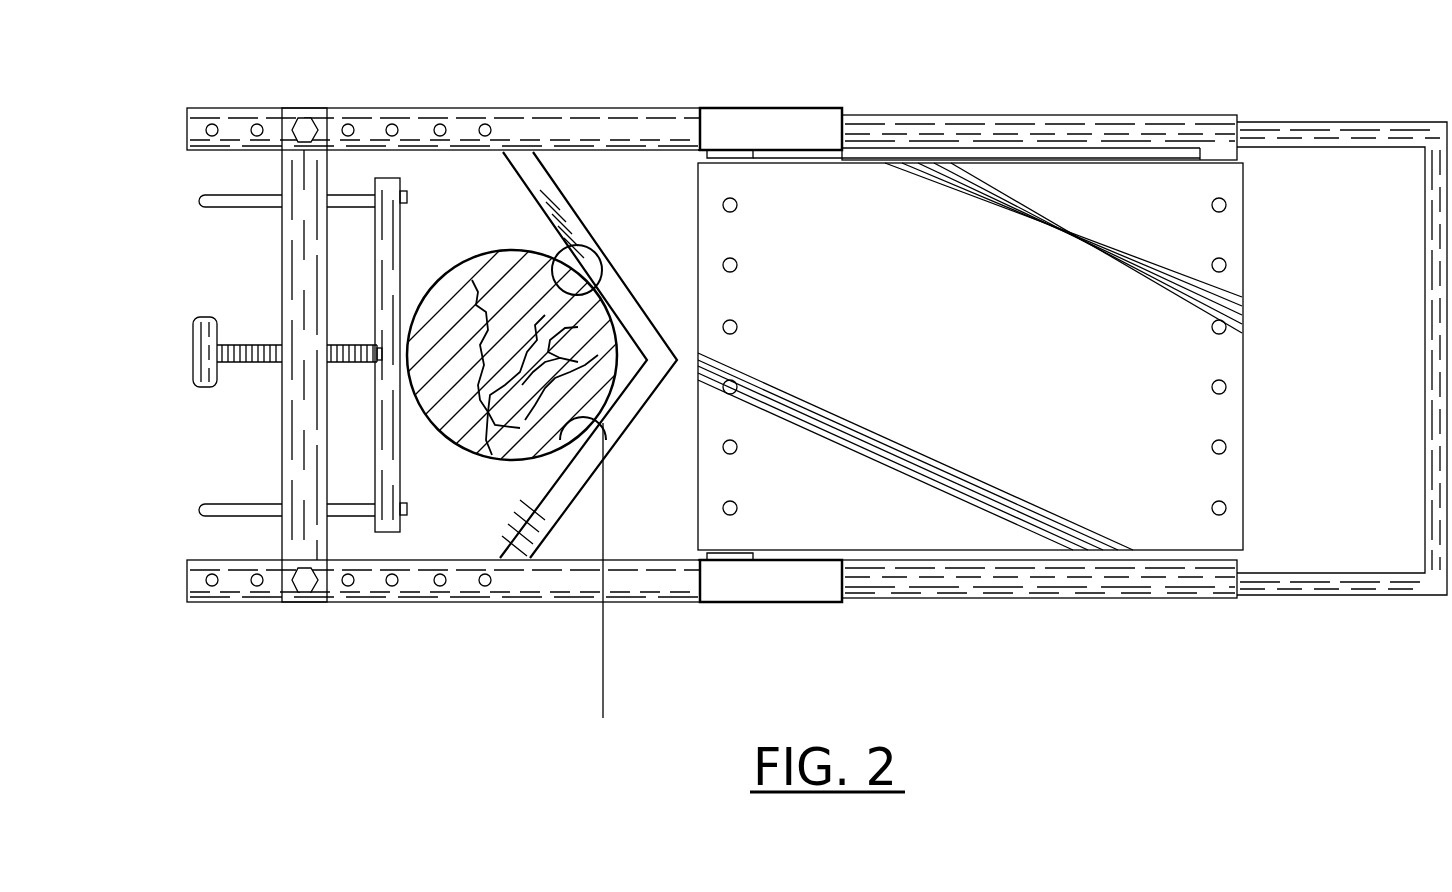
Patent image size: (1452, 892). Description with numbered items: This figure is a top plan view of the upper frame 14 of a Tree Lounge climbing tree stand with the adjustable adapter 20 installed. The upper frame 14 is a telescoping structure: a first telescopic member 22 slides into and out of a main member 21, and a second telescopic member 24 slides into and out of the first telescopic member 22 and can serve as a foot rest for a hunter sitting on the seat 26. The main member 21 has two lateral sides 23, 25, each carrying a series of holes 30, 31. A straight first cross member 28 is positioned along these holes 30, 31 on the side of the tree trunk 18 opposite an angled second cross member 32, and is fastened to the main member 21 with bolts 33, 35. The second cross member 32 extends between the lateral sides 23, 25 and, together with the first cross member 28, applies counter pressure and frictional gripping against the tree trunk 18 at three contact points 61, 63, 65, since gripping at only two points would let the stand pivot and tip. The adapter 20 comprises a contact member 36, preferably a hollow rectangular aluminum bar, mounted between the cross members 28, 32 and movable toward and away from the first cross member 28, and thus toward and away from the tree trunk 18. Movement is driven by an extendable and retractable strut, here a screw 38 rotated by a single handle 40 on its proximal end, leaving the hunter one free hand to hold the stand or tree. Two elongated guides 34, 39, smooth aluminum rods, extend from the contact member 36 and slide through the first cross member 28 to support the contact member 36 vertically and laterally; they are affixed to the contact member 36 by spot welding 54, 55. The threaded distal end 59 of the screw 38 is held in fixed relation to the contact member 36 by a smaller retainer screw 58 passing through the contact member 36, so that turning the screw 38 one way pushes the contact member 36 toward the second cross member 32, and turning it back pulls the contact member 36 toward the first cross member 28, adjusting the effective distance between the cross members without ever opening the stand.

The upper frame 14 is at (722, 100).
The tree trunk 18 is at (490, 455).
The adjustable adapter 20 is at (232, 298).
The main member 21 is at (815, 104).
The first telescopic member 22 is at (1010, 117).
The lateral side 23 is at (700, 604).
The second telescopic member 24 is at (1300, 121).
The lateral side 25 is at (505, 108).
The seat 26 is at (1115, 164).
The first cross member 28 is at (327, 170).
The holes 30 is at (393, 588).
The holes 31 is at (257, 126).
The second cross member 32 is at (580, 207).
The bolt 33 is at (297, 592).
The elongated guide 34 is at (225, 504).
The bolt 35 is at (314, 118).
The contact member 36 is at (400, 246).
The screw 38 is at (245, 362).
The elongated guide 39 is at (215, 196).
The handle 40 is at (193, 330).
The spot welding 54 is at (407, 509).
The spot welding 55 is at (407, 197).
The retainer screw 58 is at (407, 343).
The threaded distal end 59 is at (378, 347).
The contact point 61 is at (560, 250).
The contact point 63 is at (562, 452).
The contact point 65 is at (346, 293).